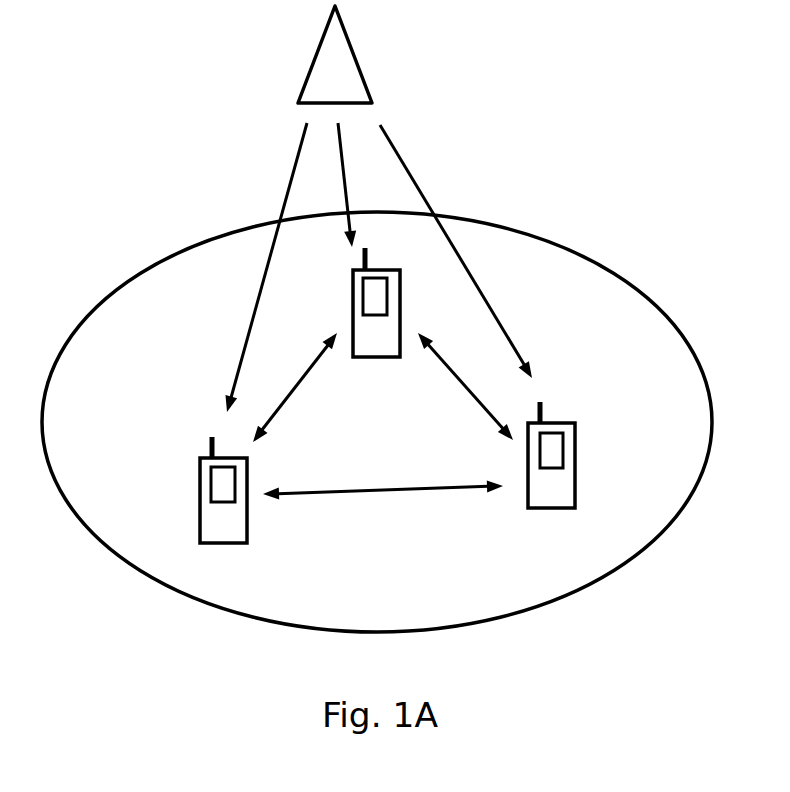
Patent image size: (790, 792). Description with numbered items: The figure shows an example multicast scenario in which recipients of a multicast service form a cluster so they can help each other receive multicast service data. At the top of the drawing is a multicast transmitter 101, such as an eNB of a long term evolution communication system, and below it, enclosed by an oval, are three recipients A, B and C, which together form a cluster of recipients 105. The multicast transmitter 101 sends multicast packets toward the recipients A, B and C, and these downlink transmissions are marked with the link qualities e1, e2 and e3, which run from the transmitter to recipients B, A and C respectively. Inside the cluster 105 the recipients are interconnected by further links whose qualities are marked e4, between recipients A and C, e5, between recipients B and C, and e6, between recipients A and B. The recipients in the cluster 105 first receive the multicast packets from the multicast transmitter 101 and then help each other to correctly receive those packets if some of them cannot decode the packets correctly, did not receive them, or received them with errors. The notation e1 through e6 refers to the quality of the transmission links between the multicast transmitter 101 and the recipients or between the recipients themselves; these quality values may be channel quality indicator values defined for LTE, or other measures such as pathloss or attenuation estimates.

The multicast transmitter 101 is at (313, 60).
The cluster of recipients 105 is at (580, 593).
The recipient A is at (368, 357).
The recipient B is at (202, 508).
The recipient C is at (577, 457).
The transmission link quality e1 is at (257, 267).
The transmission link quality e2 is at (365, 185).
The transmission link quality e3 is at (456, 251).
The transmission link quality e4 is at (465, 386).
The transmission link quality e5 is at (383, 513).
The transmission link quality e6 is at (295, 389).